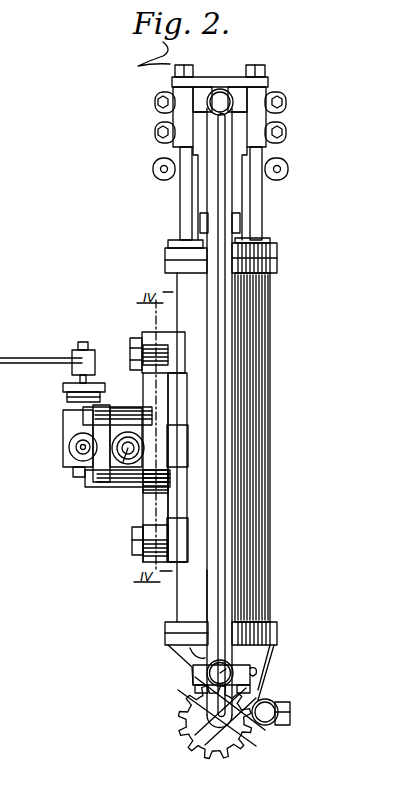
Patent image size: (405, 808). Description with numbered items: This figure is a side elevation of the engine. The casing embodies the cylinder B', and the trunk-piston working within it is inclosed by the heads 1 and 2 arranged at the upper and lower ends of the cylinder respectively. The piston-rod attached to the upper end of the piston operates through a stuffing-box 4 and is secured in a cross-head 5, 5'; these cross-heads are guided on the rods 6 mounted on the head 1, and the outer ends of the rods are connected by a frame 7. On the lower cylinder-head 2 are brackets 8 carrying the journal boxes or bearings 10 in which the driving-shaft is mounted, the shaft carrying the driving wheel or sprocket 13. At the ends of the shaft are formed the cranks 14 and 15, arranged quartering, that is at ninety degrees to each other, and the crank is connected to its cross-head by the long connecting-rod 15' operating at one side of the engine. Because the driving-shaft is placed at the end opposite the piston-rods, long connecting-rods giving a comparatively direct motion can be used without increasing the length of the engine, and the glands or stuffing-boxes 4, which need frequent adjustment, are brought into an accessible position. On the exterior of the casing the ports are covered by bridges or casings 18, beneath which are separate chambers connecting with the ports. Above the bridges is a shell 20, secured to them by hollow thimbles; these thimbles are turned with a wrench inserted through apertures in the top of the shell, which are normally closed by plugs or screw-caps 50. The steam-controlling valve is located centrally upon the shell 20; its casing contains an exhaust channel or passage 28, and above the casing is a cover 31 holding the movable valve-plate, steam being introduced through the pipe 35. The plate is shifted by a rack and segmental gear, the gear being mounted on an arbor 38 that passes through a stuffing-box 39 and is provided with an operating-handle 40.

The head 1 is at (277, 247).
The head 2 is at (276, 640).
The stuffing-box 4 is at (240, 197).
The cross-head 5 is at (231, 164).
The cross-head 5' is at (232, 117).
The rods 6 is at (182, 198).
The frame 7 is at (219, 81).
The brackets 8 is at (225, 673).
The journal boxes or bearings 10 is at (184, 735).
The driving wheel or sprocket 13 is at (184, 714).
The crank 14 is at (271, 704).
The crank 15 is at (173, 665).
The connecting-rod 15' is at (200, 596).
The bridges or casings 18 is at (175, 355).
The shell 20 is at (147, 510).
The exhaust channel or passage 28 is at (120, 470).
The cover 31 is at (68, 428).
The pipe 35 is at (75, 463).
The arbor 38 is at (80, 380).
The stuffing-box 39 is at (75, 395).
The operating-handle 40 is at (26, 790).
The plugs or screw-caps 50 is at (132, 567).
The cylinder B' is at (266, 447).